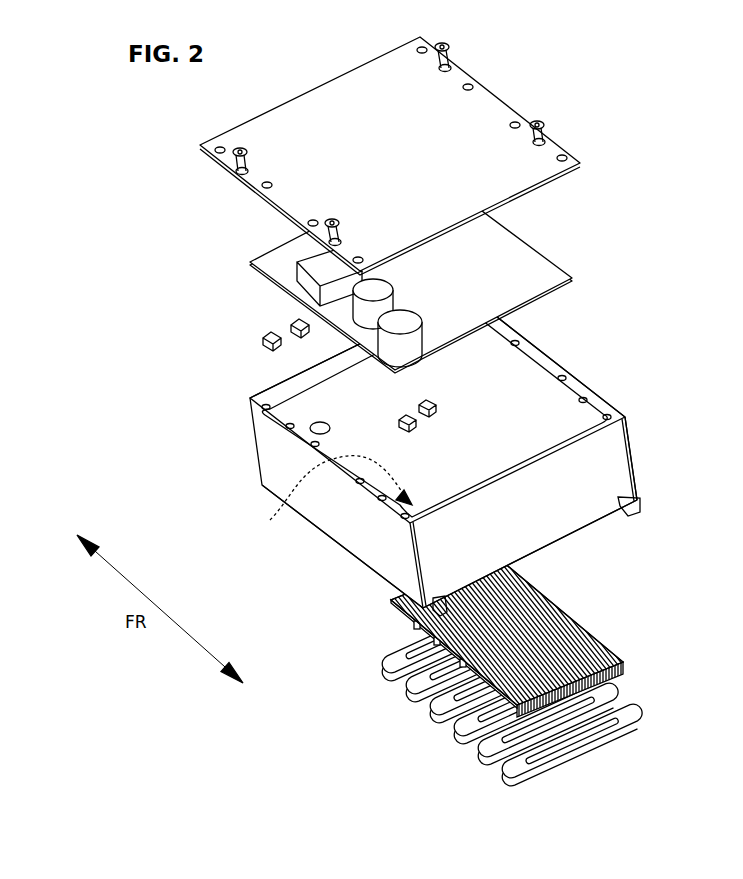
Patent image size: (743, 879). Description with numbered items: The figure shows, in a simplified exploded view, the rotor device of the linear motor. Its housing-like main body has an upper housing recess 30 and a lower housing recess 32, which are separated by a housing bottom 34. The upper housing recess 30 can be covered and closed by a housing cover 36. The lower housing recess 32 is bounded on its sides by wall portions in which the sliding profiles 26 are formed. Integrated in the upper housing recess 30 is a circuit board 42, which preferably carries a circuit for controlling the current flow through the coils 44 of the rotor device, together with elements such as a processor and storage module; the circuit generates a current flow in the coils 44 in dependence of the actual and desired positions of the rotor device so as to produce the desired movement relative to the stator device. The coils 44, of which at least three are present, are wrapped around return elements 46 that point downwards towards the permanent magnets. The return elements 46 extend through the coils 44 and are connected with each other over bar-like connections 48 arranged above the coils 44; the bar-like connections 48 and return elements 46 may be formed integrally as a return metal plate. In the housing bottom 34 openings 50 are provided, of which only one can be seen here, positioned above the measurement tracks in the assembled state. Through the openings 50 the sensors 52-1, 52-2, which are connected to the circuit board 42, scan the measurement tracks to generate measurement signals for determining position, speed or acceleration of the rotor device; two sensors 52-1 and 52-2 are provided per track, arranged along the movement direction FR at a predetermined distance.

The sliding profile 26 is at (440, 608).
The upper housing recess 30 is at (505, 440).
The lower housing recess 32 is at (570, 530).
The housing bottom 34 is at (478, 400).
The housing cover 36 is at (478, 150).
The circuit board 42 is at (540, 292).
The coils 44 is at (512, 767).
The return elements 46 is at (420, 633).
The bar-like connections 48 is at (560, 628).
The openings 50 is at (314, 425).
The sensor 52-1 is at (296, 322).
The sensor 52-2 is at (431, 417).